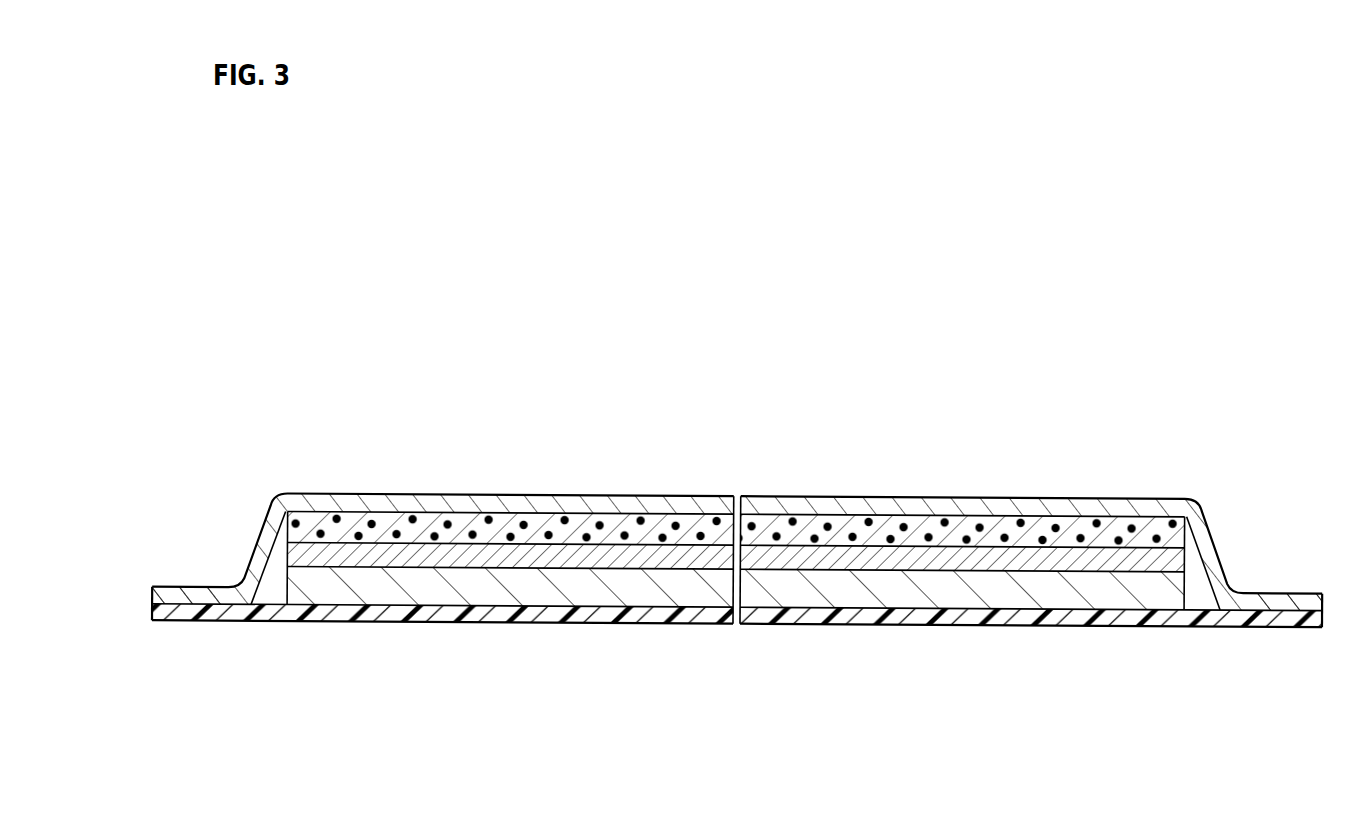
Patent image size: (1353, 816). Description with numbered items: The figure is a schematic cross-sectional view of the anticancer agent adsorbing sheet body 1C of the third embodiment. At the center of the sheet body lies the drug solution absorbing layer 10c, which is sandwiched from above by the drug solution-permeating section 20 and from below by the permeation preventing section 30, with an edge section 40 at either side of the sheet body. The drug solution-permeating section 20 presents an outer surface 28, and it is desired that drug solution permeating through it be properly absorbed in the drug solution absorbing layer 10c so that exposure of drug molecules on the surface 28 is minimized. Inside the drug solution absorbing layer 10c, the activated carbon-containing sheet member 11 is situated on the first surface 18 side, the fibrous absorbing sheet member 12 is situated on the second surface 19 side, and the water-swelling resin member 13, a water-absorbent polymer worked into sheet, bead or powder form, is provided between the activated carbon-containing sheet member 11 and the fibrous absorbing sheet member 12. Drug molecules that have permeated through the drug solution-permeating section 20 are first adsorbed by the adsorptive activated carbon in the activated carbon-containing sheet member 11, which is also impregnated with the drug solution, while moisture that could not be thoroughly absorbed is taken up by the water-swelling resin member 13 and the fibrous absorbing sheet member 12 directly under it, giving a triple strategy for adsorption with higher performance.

The anticancer agent adsorbing sheet body 1C is at (315, 463).
The drug solution absorbing layer 10c is at (462, 508).
The activated carbon-containing sheet member 11 is at (658, 510).
The fibrous absorbing sheet member 12 is at (790, 590).
The water-swelling resin member 13 is at (632, 560).
The first surface of drug solution absorbing layer 18 is at (963, 497).
The second surface of drug solution absorbing layer 19 is at (957, 613).
The drug solution-permeating section 20 is at (1112, 497).
The surface 28 is at (830, 497).
The permeation preventing section 30 is at (425, 623).
The edge section 40 is at (150, 600).